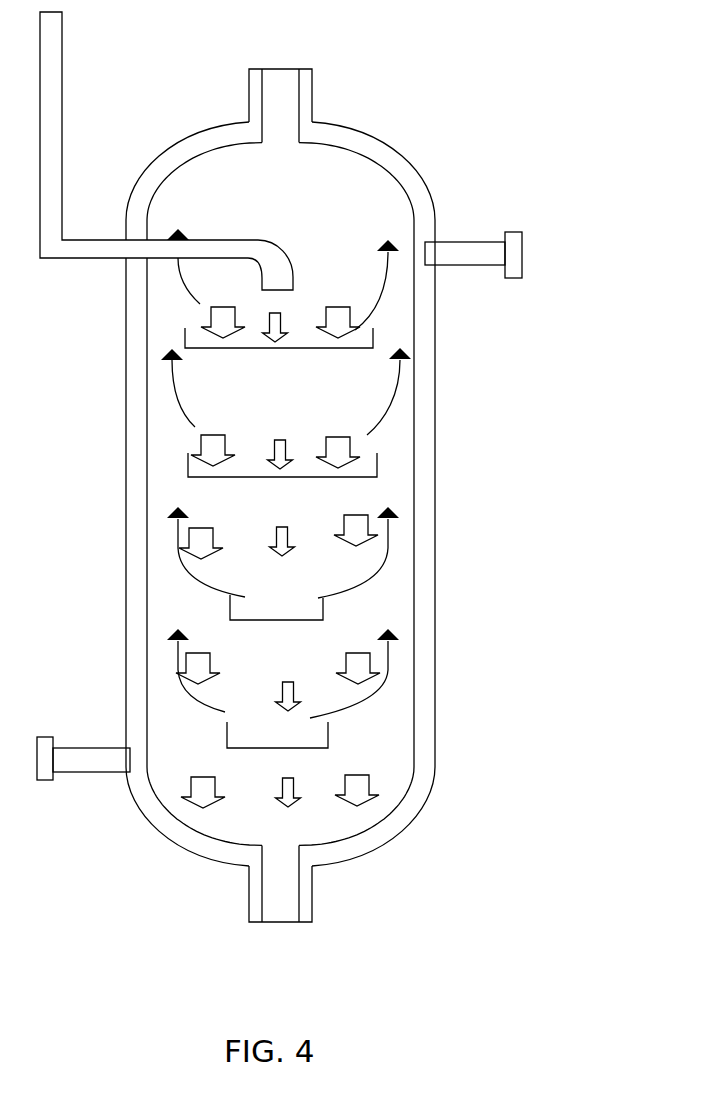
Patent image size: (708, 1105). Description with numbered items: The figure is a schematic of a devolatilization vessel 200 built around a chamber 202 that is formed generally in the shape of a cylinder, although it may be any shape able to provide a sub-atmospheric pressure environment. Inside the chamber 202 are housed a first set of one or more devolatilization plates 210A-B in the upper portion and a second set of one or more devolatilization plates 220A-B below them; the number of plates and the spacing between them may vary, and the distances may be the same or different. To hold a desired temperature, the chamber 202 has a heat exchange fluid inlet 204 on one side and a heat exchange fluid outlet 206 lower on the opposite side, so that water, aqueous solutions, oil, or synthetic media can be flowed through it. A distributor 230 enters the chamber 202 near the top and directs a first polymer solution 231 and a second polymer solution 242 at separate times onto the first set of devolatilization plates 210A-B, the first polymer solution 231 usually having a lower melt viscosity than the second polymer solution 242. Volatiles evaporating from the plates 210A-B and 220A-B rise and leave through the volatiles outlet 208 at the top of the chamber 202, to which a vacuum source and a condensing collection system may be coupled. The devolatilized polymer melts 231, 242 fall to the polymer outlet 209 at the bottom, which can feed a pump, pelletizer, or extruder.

The devolatilization vessel 200 is at (409, 908).
The chamber 202 is at (389, 148).
The heat exchange fluid inlet 204 is at (470, 261).
The heat exchange fluid outlet 206 is at (87, 748).
The volatiles outlet 208 is at (273, 102).
The polymer outlet 209 is at (280, 878).
The distributor 230 is at (95, 258).
The first polymer solution 231 is at (283, 326).
The second polymer solution 242 is at (215, 550).
The first set of one or more devolatilization plates 210A-B is at (467, 330).
The second set of one or more devolatilization plates 220A-B is at (465, 768).